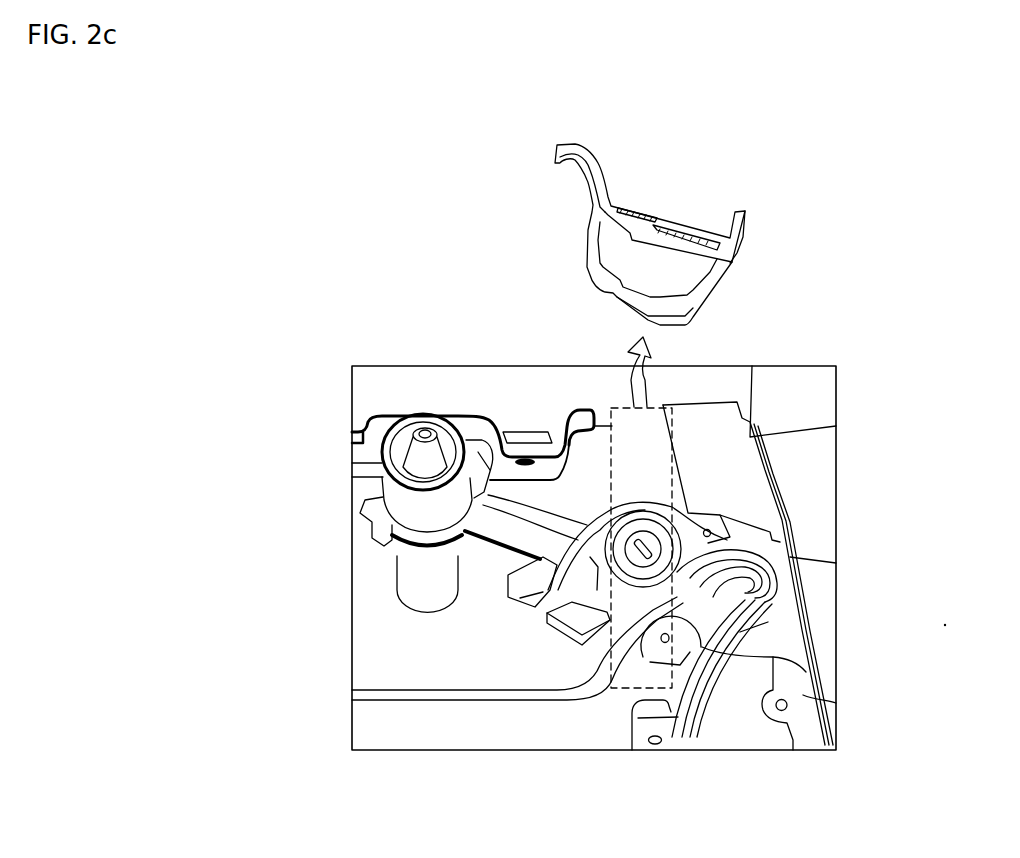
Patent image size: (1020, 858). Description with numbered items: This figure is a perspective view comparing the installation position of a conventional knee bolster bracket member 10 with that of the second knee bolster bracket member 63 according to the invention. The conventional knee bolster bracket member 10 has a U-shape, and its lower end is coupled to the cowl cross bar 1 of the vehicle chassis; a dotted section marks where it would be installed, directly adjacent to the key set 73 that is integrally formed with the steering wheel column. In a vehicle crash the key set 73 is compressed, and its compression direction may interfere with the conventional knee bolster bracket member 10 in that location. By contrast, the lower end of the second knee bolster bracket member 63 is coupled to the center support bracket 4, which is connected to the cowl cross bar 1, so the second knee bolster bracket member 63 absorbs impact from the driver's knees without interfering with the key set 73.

The cowl cross bar 1 is at (431, 380).
The conventional knee bolster bracket member 10 is at (757, 247).
The key set 73 is at (660, 542).
The second knee bolster bracket member 63 is at (700, 655).
The center support bracket 4 is at (805, 695).